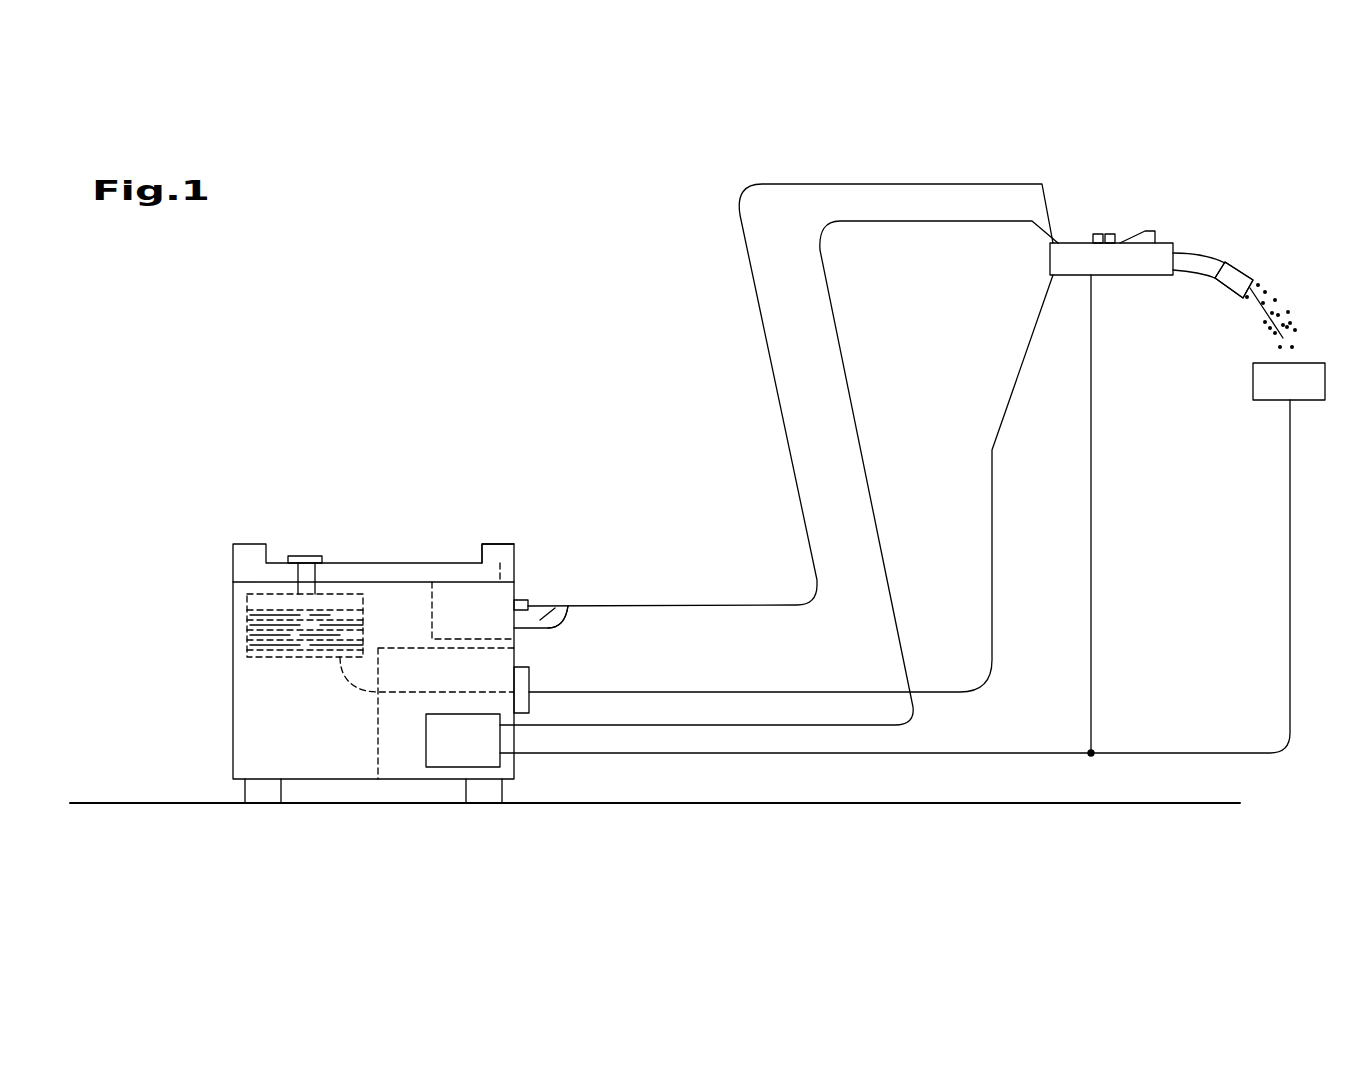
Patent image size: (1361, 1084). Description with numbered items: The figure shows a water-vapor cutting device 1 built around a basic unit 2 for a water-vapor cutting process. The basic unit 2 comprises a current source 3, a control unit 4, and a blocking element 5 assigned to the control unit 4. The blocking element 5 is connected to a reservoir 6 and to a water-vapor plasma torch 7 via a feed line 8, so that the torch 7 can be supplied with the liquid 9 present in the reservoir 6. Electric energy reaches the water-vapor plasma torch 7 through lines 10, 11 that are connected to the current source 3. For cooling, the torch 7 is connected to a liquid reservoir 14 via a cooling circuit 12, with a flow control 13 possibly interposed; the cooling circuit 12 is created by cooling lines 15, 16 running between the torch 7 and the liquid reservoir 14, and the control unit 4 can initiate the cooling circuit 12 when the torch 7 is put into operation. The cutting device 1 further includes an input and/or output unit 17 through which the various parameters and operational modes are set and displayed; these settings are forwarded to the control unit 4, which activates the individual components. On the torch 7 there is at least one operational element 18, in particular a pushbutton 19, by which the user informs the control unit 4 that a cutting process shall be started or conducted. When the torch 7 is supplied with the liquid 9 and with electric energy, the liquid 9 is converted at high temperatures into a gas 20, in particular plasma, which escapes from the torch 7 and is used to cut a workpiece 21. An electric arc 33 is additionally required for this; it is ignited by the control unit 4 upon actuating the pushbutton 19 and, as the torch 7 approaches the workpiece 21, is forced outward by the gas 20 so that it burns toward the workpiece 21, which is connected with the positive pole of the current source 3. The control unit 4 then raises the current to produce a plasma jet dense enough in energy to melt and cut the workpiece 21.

The water-vapor cutting device 1 is at (582, 284).
The basic unit 2 is at (222, 492).
The current source 3 is at (456, 740).
The control unit 4 is at (390, 733).
The blocking element 5 is at (523, 705).
The reservoir 6 is at (231, 656).
The water-vapor plasma torch 7 is at (1166, 203).
The feed line 8 is at (765, 673).
The liquid 9 is at (245, 630).
The line 10 is at (855, 378).
The line 11 is at (1288, 590).
The cooling circuit 12 is at (546, 556).
The flow control 13 is at (518, 600).
The liquid reservoir 14 is at (473, 607).
The cooling line 15 is at (543, 600).
The cooling line 16 is at (568, 606).
The input and/or output unit 17 is at (508, 549).
The operational element 18 is at (1124, 210).
The pushbutton 19 is at (1135, 246).
The gas 20 is at (1260, 247).
The workpiece 21 is at (1267, 380).
The electric arc 33 is at (1270, 310).